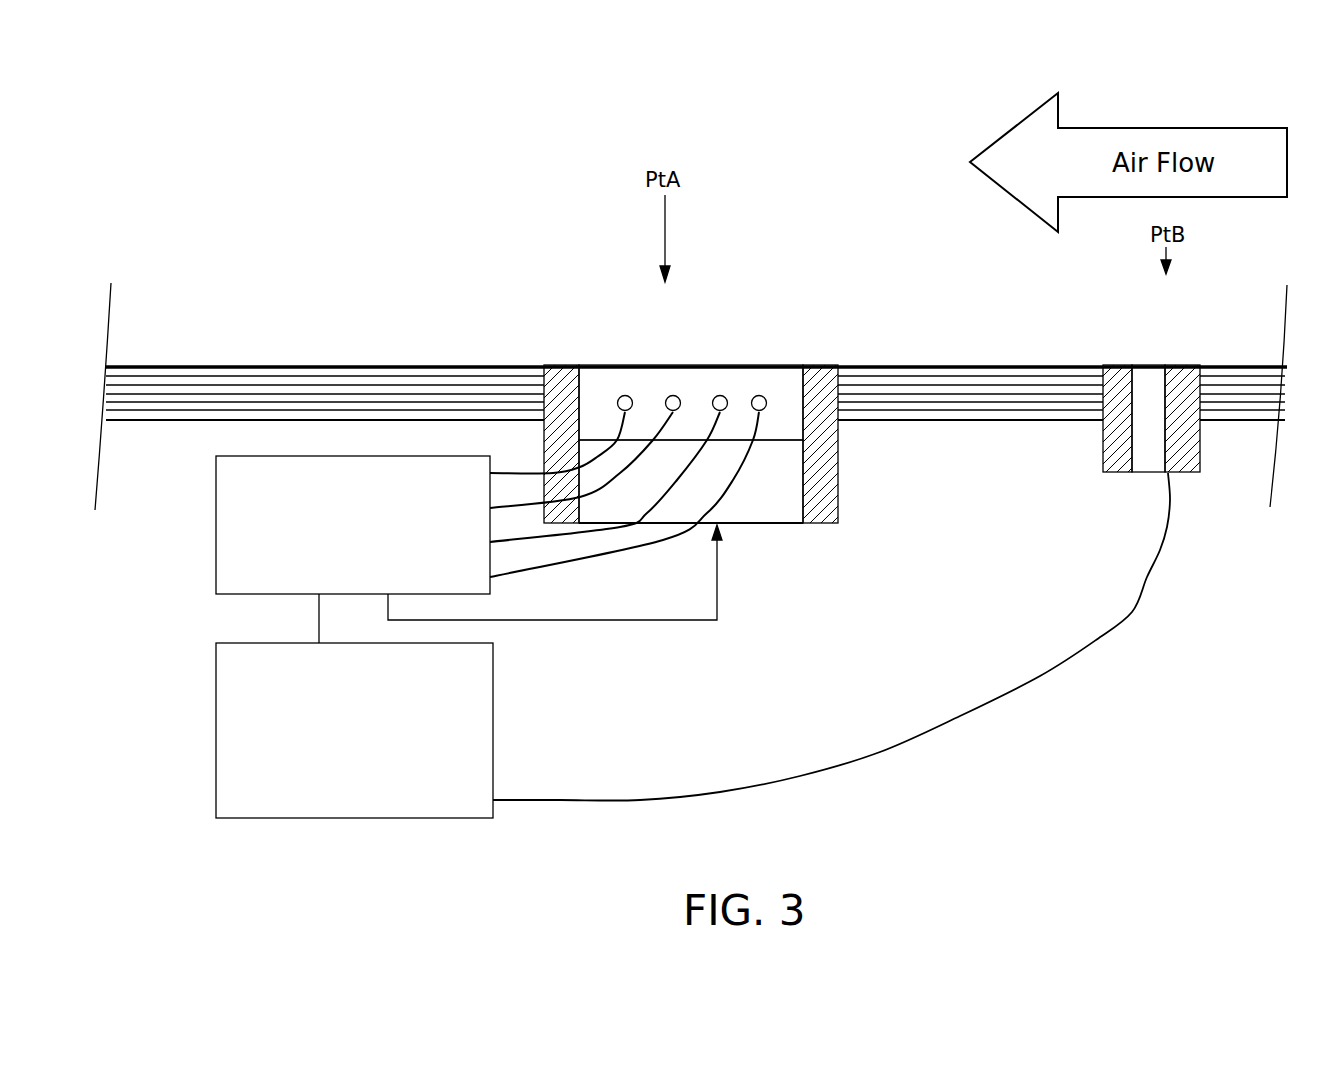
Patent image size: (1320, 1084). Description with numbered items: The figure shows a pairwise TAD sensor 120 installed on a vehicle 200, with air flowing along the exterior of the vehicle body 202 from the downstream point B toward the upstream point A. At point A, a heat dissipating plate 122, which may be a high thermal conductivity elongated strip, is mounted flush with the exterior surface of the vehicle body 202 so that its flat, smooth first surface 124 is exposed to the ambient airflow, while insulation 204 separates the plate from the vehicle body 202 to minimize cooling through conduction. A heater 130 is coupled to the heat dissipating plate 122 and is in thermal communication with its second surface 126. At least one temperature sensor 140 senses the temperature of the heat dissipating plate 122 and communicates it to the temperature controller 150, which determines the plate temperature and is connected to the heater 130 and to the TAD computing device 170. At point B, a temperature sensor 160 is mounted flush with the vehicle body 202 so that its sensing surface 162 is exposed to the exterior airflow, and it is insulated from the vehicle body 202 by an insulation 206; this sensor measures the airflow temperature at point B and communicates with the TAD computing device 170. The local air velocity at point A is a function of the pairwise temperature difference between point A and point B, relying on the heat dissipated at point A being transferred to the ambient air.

The pairwise TAD sensor 120 is at (683, 124).
The vehicle 200 is at (178, 331).
The vehicle body 202 is at (250, 365).
The insulation 204 is at (558, 365).
The heat dissipating plate 122 is at (687, 363).
The first surface 124 is at (795, 366).
The second surface 126 is at (787, 445).
The heater 130 is at (748, 525).
The temperature sensor 140 is at (762, 395).
The temperature controller 150 is at (455, 557).
The TAD computing device 170 is at (478, 807).
The temperature sensor 160 is at (1167, 472).
The sensing surface 162 is at (1148, 365).
The insulation 206 is at (1122, 472).